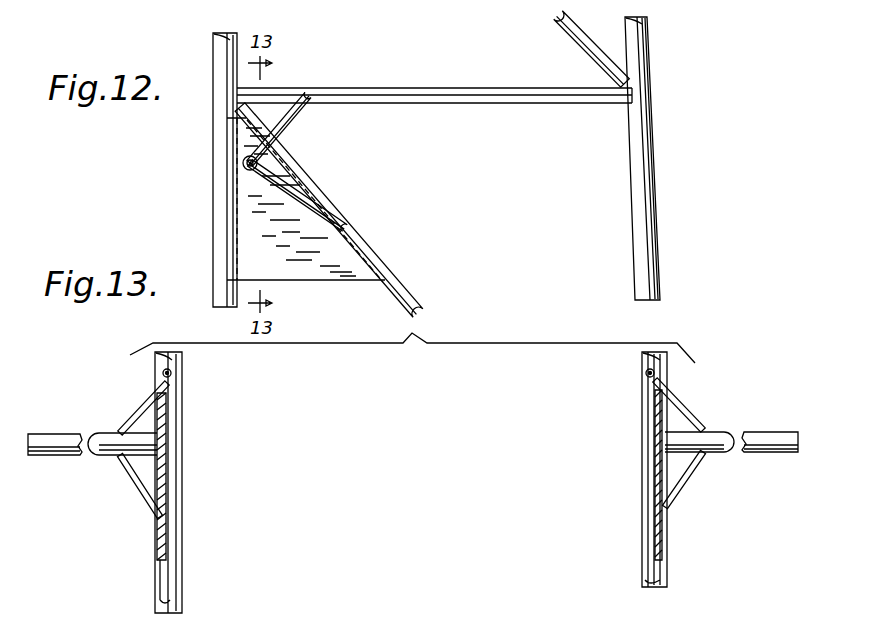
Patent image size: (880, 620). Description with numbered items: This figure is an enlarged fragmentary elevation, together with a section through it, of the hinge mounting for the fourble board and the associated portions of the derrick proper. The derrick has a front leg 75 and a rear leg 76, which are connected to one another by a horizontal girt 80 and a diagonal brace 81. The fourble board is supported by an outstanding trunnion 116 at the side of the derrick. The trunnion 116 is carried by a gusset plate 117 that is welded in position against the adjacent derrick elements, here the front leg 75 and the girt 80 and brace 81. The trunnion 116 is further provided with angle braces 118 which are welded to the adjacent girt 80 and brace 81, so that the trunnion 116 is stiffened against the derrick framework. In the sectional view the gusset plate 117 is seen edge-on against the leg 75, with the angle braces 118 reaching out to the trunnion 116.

In FIG. 12, the front leg 75 is at (217, 137).
In FIG. 13, the front leg 75 is at (182, 368).
In FIG. 12, the rear leg 76 is at (653, 145).
In FIG. 12, the girt 80 is at (501, 88).
In FIG. 13, the girt 80 is at (163, 372).
In FIG. 12, the brace 81 is at (573, 43).
In FIG. 12, the trunnion 116 is at (237, 163).
In FIG. 13, the trunnion 116 is at (57, 440).
In FIG. 12, the gusset plate 117 is at (338, 255).
In FIG. 13, the gusset plate 117 is at (155, 547).
In FIG. 12, the angle brace 118 is at (280, 177).
In FIG. 13, the angle brace 118 is at (147, 402).